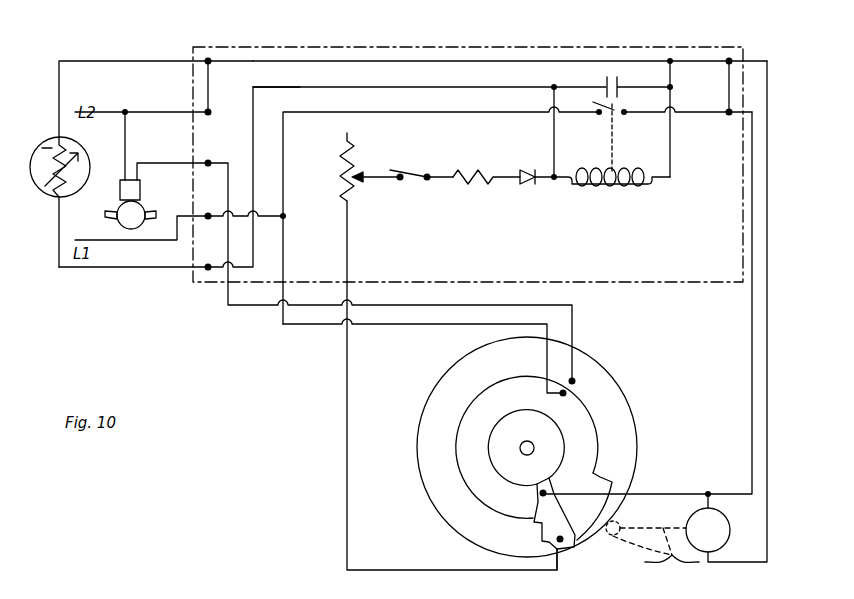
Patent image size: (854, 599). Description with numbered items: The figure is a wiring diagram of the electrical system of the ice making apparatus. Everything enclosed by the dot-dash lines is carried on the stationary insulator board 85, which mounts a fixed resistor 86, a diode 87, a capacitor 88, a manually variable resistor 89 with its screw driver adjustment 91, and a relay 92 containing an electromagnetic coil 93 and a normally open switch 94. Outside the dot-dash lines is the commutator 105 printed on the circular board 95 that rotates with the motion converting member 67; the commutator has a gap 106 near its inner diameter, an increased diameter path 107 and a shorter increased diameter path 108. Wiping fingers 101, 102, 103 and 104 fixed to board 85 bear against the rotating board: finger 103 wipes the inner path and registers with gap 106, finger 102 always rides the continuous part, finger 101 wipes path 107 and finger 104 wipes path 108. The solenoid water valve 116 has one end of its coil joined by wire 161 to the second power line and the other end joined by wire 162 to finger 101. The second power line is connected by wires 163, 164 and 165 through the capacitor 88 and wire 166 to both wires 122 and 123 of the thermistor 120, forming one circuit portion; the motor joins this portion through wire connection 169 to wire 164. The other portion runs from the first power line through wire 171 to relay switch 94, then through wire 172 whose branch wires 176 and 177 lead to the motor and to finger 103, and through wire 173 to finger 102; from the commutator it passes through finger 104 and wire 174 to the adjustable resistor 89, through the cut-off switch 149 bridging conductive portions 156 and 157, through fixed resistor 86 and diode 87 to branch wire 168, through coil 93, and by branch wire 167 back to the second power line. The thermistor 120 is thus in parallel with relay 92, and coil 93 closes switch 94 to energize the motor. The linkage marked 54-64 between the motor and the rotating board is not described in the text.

The insulated wire 122 is at (124, 60).
The thermistor 120 is at (58, 148).
The wire 163 is at (208, 80).
The wire 161 is at (128, 129).
The wire 162 is at (140, 163).
The solenoid actuated valve 116 is at (141, 190).
The insulated wire 123 is at (127, 268).
The wire 166 is at (293, 86).
The wire 164 is at (342, 61).
The wire 165 is at (672, 74).
The branch wire 167 is at (672, 150).
The branch wire 168 is at (554, 124).
The wire connection 169 is at (768, 378).
The wire 171 is at (370, 112).
The wire 172 is at (752, 398).
The wire 173 is at (325, 330).
The wire 174 is at (345, 463).
The insulator board 85 is at (705, 286).
The fixed resistor 86 is at (480, 182).
The diode 87 is at (525, 182).
The capacitor 88 is at (605, 80).
The manually variable rotatable resistor 89 is at (345, 165).
The screw driver adjustment 91 is at (366, 175).
The relay 92 is at (612, 142).
The electromagnetic coil 93 is at (628, 186).
The switch 94 is at (601, 115).
The cut-off switch element 149 is at (412, 175).
The conductive portion 156 is at (432, 174).
The conductive portion 157 is at (401, 182).
The circular insulator board 95 is at (430, 480).
The rotatable disc-like motion converting member 67 is at (612, 380).
The wiping finger 101 is at (575, 380).
The wiping finger 102 is at (568, 393).
The wiping finger 103 is at (535, 505).
The wiping finger 104 is at (562, 543).
The commutator 105 is at (473, 403).
The gap 106 is at (526, 448).
The increased diameter path 107 is at (605, 470).
The increased diameter path 108 is at (553, 553).
The branch wire 176 is at (698, 500).
The branch wire 177 is at (690, 493).
The drive linkage 54-64 is at (652, 556).